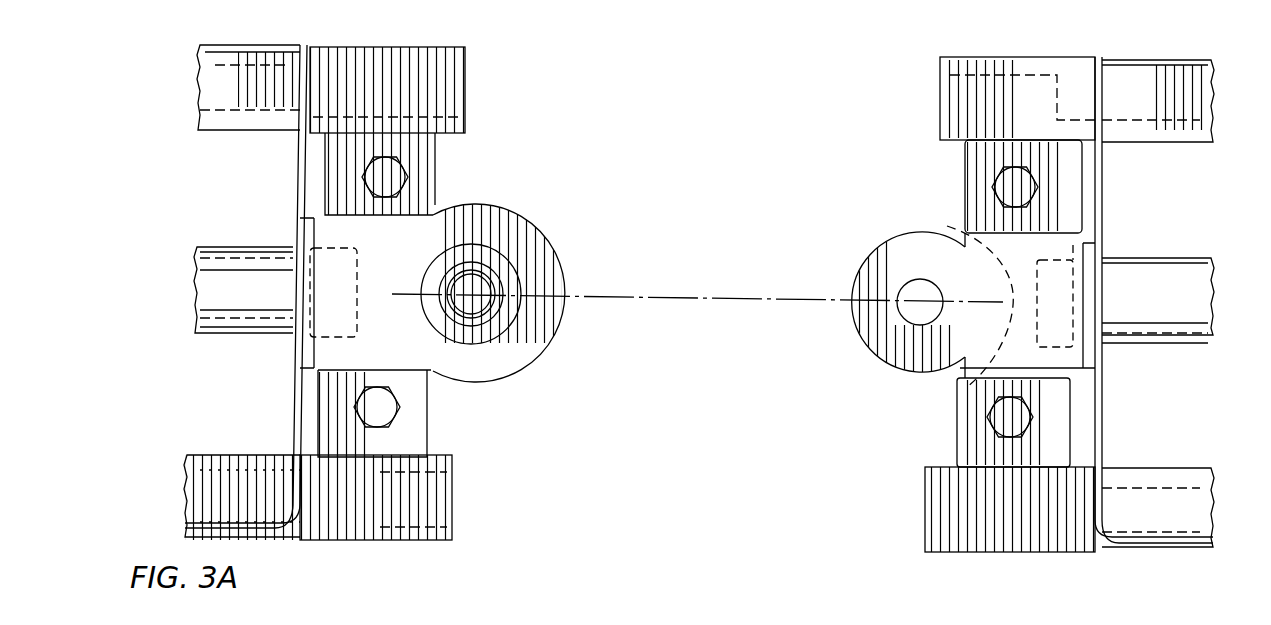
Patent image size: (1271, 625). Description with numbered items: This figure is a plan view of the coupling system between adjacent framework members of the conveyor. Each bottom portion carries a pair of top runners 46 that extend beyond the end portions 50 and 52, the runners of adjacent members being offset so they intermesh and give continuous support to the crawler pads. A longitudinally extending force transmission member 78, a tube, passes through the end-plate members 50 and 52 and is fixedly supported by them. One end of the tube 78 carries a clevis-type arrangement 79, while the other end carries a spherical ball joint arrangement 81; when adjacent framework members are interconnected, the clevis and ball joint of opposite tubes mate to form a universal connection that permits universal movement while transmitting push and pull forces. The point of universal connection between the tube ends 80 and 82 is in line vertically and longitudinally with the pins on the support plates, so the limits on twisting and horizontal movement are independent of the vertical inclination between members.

The top runners 46 is at (467, 104).
The end portion 50 is at (1102, 96).
The end portion 52 is at (305, 97).
The force transmission member 78 is at (233, 283).
The clevis-type arrangement 79 is at (870, 334).
The end of tube 80 is at (328, 289).
The spherical ball joint arrangement 81 is at (496, 281).
The end of tube 82 is at (947, 226).